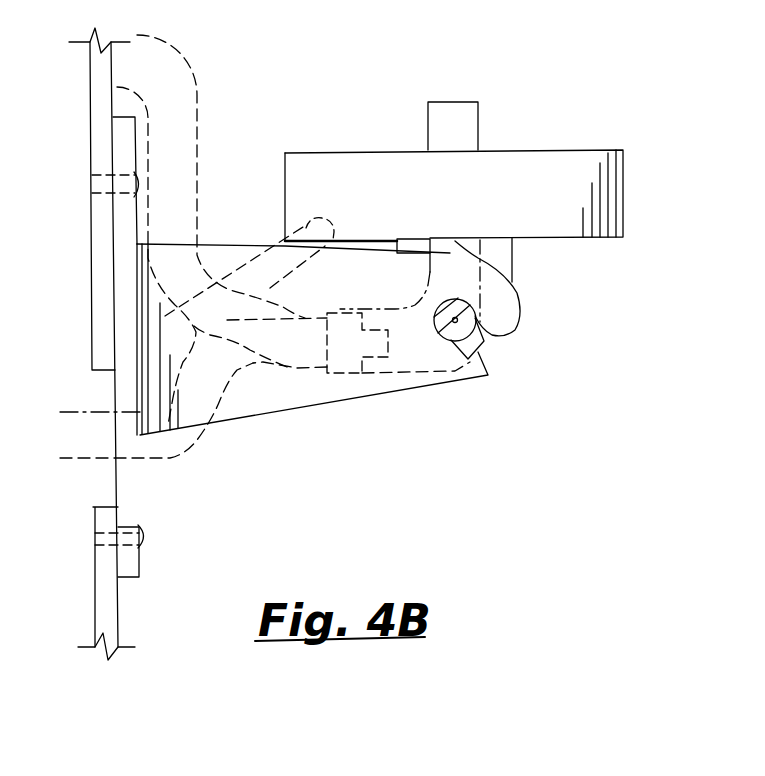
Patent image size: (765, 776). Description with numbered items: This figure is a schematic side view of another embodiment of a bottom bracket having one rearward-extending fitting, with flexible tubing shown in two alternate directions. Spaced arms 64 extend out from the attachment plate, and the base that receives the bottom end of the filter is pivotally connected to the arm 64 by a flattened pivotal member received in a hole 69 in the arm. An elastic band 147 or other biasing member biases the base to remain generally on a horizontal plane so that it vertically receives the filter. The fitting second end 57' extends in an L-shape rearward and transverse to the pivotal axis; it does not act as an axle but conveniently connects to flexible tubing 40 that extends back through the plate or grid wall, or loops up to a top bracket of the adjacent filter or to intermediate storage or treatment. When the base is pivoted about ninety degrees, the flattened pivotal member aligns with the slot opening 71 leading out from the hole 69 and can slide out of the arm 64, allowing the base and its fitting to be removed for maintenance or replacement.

The fluid conduit 40 is at (182, 152).
The elastic band 147 is at (263, 254).
The fitting second end 57' is at (359, 391).
The arm 64 is at (500, 308).
The hole 69 is at (450, 300).
The slot opening 71 is at (483, 347).